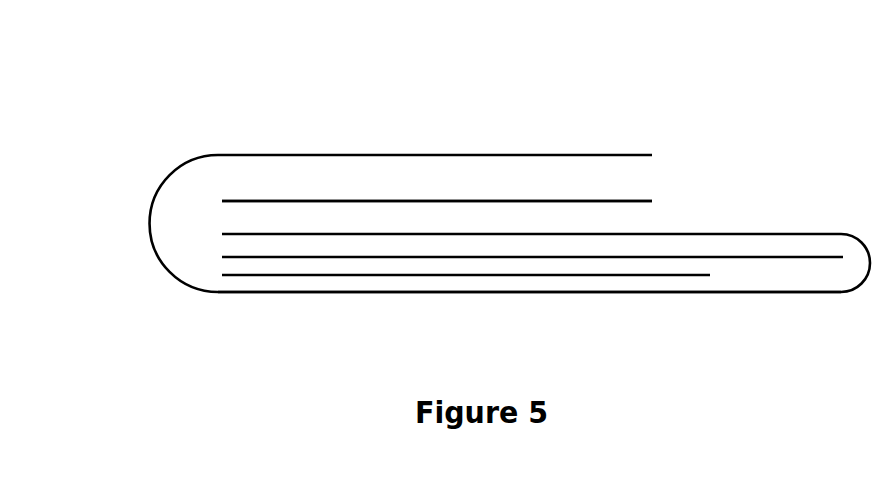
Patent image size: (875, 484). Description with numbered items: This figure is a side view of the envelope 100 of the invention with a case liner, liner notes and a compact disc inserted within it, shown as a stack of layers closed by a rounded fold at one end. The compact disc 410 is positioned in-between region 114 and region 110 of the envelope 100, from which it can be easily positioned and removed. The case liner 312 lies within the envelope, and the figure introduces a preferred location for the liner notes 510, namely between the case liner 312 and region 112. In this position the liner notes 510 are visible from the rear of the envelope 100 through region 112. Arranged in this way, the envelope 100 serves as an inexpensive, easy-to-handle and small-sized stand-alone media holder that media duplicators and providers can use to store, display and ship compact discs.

The envelope 100 is at (231, 114).
The region 110 is at (788, 233).
The region 112 is at (257, 293).
The region 114 is at (367, 155).
The case liner 312 is at (730, 258).
The compact disc 410 is at (493, 200).
The liner notes 510 is at (607, 275).